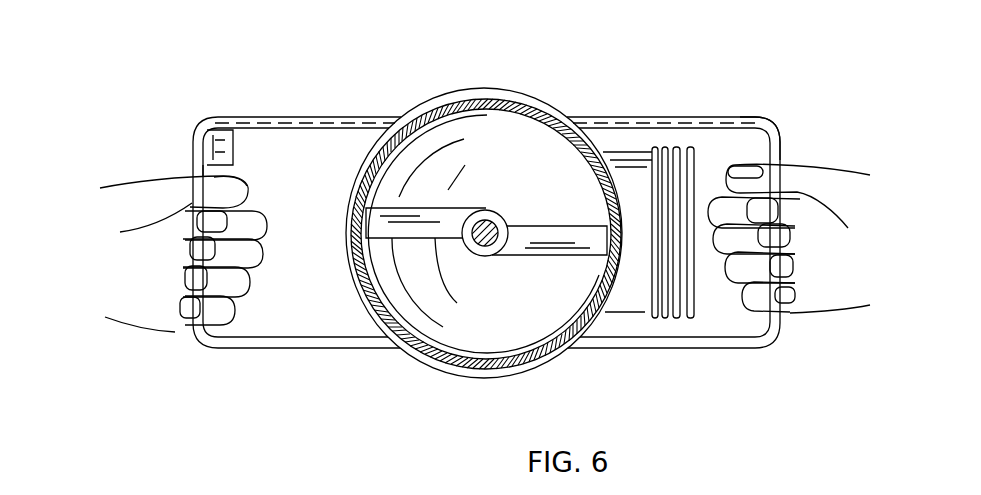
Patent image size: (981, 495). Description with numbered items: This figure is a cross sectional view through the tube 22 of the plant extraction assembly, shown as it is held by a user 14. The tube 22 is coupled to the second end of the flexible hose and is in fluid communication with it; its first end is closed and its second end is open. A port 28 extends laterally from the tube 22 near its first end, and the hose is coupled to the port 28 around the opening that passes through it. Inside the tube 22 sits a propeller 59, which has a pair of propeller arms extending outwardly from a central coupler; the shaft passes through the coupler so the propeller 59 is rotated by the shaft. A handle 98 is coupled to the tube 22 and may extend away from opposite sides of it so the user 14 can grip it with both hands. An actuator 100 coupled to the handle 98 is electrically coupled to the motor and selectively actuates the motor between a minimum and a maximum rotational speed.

The user 14 is at (820, 165).
The tube 22 is at (345, 176).
The port 28 is at (692, 146).
The propeller 59 is at (433, 191).
The handle 98 is at (771, 117).
The actuator 100 is at (235, 149).